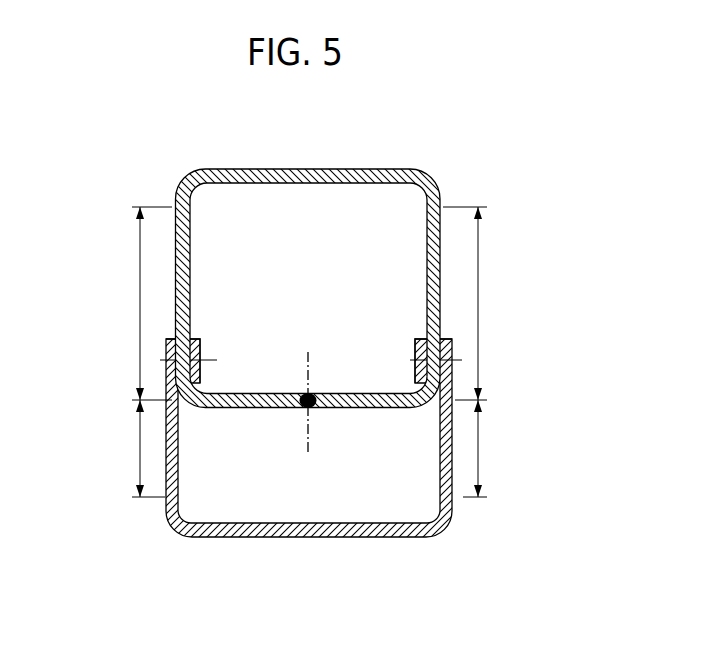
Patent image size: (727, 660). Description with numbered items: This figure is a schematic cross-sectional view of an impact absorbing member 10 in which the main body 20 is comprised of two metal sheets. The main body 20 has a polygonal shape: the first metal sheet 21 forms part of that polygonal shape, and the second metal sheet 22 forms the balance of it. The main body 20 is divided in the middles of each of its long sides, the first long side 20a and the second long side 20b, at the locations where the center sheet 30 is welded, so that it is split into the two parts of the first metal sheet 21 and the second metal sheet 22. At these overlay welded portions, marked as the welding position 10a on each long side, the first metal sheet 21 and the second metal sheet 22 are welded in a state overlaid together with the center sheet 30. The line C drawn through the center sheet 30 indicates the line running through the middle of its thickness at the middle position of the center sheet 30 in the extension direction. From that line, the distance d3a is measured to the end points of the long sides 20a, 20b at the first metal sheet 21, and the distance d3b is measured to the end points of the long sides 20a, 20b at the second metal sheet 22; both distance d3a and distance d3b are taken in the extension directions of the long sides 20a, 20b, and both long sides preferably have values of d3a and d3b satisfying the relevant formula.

The impact absorbing member 10 is at (170, 151).
The welding position 10a is at (200, 356).
The main body 20 is at (272, 157).
The first long side 20a is at (427, 320).
The second long side 20b is at (193, 318).
The first metal sheet 21 is at (322, 169).
The second metal sheet 22 is at (320, 537).
The center sheet 30 is at (318, 408).
The center line C is at (302, 407).
The distance d3a is at (308, 303).
The distance d3b is at (308, 448).